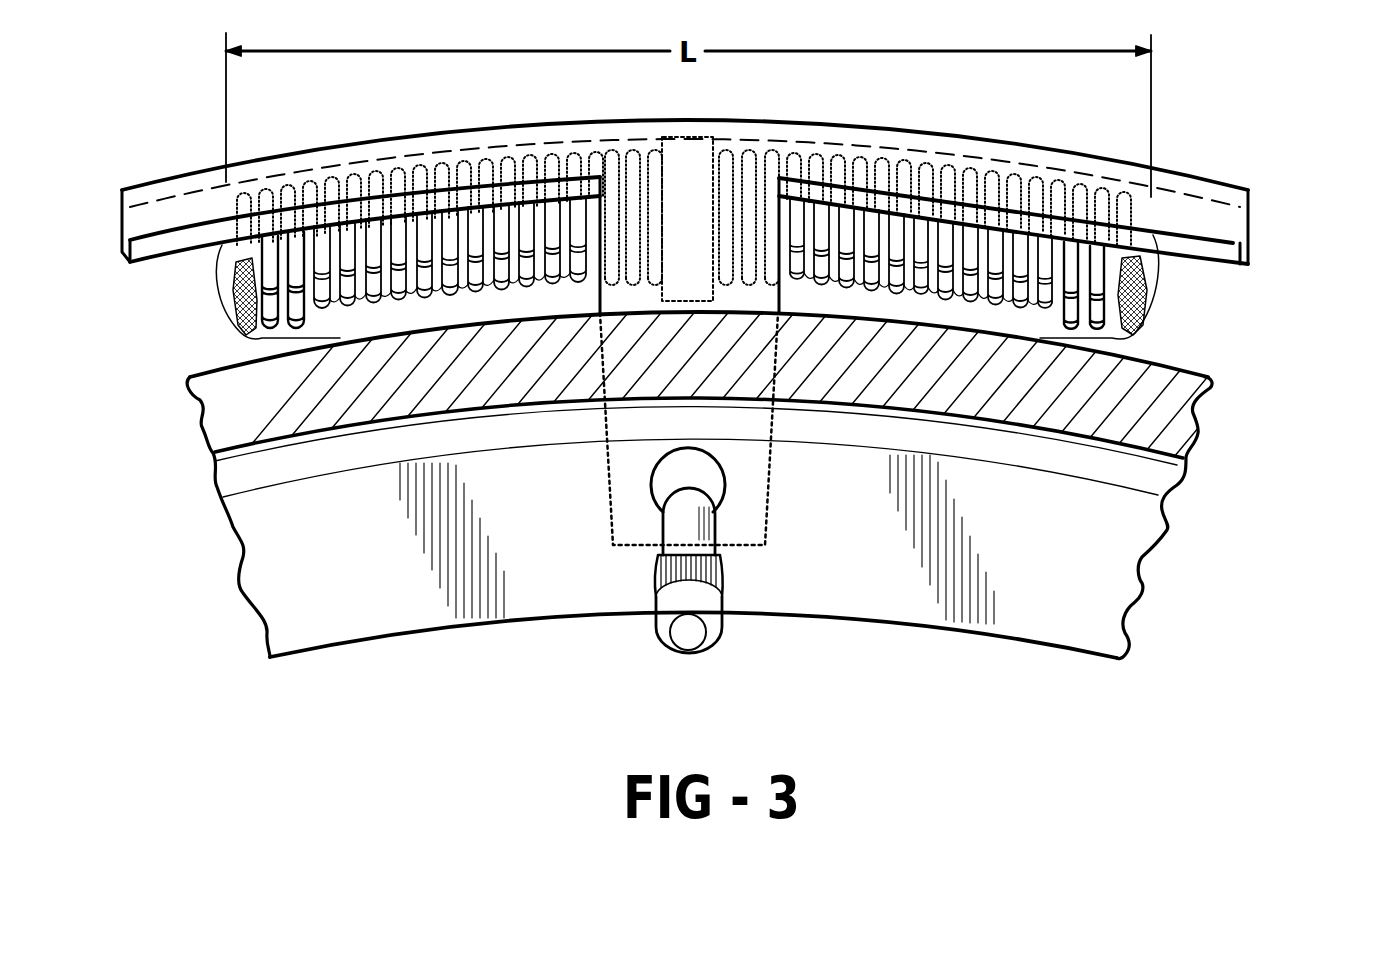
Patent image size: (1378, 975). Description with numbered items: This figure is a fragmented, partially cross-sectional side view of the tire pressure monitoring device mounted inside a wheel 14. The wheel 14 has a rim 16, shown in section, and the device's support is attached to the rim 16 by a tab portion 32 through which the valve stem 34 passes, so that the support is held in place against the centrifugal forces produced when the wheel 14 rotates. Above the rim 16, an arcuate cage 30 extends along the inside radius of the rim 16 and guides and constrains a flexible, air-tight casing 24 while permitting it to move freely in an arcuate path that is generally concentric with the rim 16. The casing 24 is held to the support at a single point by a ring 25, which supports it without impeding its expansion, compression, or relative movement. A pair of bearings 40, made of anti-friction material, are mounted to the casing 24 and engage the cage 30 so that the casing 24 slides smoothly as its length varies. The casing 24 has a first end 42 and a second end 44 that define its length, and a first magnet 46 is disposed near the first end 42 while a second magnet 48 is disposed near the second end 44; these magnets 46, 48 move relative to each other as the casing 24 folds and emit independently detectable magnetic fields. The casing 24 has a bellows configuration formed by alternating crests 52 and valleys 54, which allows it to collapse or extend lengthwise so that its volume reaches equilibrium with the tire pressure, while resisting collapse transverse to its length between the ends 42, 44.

The wheel 14 is at (235, 556).
The rim 16 is at (240, 412).
The casing 24 is at (483, 247).
The ring 25 is at (679, 145).
The cage 30 is at (1180, 207).
The tab portion 32 is at (753, 297).
The valve stem 34 is at (713, 620).
The bearing 40 is at (1077, 330).
The first end 42 is at (222, 263).
The second end 44 is at (1160, 270).
The first magnet 46 is at (227, 297).
The second magnet 48 is at (1147, 297).
The crests 52 is at (920, 253).
The valleys 54 is at (1013, 243).